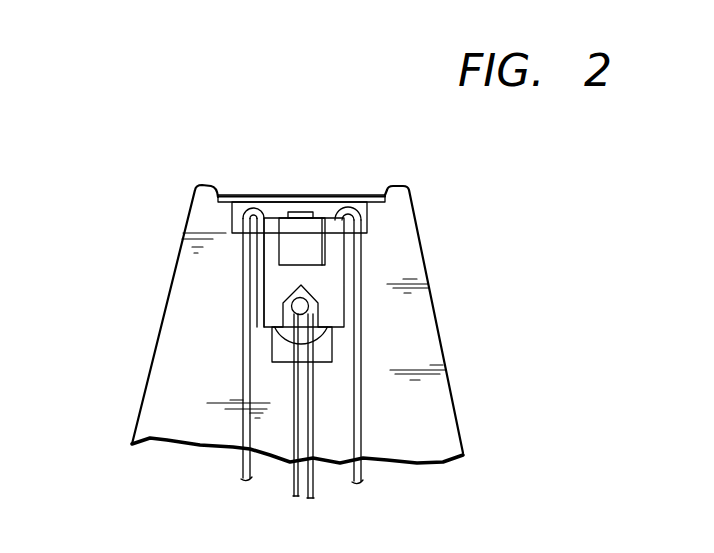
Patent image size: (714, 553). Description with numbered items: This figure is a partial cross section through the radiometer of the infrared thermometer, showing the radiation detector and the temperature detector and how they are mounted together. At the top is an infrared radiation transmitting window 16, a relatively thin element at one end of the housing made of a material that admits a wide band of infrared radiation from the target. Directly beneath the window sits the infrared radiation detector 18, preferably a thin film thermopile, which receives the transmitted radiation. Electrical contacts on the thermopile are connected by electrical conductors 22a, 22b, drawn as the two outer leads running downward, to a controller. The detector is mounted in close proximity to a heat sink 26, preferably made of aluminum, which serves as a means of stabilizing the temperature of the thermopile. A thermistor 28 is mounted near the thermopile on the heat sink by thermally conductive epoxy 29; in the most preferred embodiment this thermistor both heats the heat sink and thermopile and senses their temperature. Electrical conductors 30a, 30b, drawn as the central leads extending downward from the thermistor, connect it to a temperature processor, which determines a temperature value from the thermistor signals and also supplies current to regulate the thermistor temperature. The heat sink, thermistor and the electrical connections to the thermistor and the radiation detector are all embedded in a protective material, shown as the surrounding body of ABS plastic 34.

The infrared radiation transmitting window 16 is at (240, 197).
The infrared radiation detector 18 is at (302, 212).
The electrical conductor 22a is at (363, 480).
The electrical conductor 22b is at (243, 478).
The heat sink 26 is at (322, 277).
The thermistor 28 is at (298, 310).
The thermally conductive epoxy 29 is at (313, 346).
The electrical conductor 30a is at (315, 487).
The electrical conductor 30b is at (292, 481).
The ABS plastic 34 is at (437, 410).